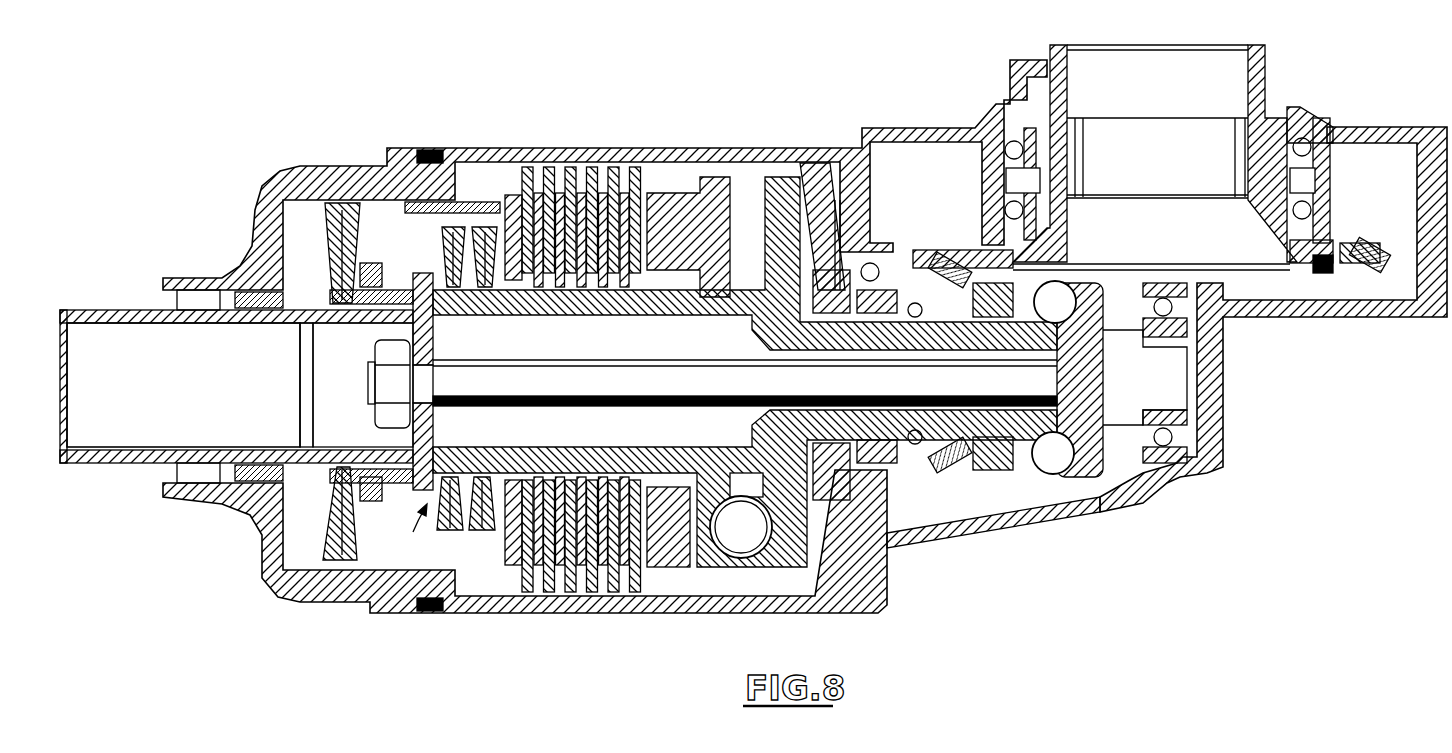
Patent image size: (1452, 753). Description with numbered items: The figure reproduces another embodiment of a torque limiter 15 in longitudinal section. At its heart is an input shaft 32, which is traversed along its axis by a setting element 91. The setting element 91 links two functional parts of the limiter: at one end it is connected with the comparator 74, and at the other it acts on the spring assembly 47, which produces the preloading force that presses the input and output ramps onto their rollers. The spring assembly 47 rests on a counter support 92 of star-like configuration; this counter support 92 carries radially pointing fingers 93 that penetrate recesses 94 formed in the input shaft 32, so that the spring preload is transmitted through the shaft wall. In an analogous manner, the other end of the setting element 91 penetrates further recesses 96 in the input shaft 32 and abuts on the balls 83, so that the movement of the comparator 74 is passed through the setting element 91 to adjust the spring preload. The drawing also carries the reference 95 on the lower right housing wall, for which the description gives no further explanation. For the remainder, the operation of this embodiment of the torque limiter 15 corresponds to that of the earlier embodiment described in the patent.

The torque limiter 15 is at (291, 611).
The input shaft 32 is at (610, 318).
The spring assembly 47 is at (433, 236).
The comparator 74 is at (985, 440).
The balls 83 is at (1055, 290).
The setting element 91 is at (614, 402).
The counter support 92 is at (408, 540).
The fingers 93 is at (435, 342).
The recesses 94 is at (405, 320).
The housing wall 95 is at (1103, 480).
The recesses 96 is at (1118, 340).